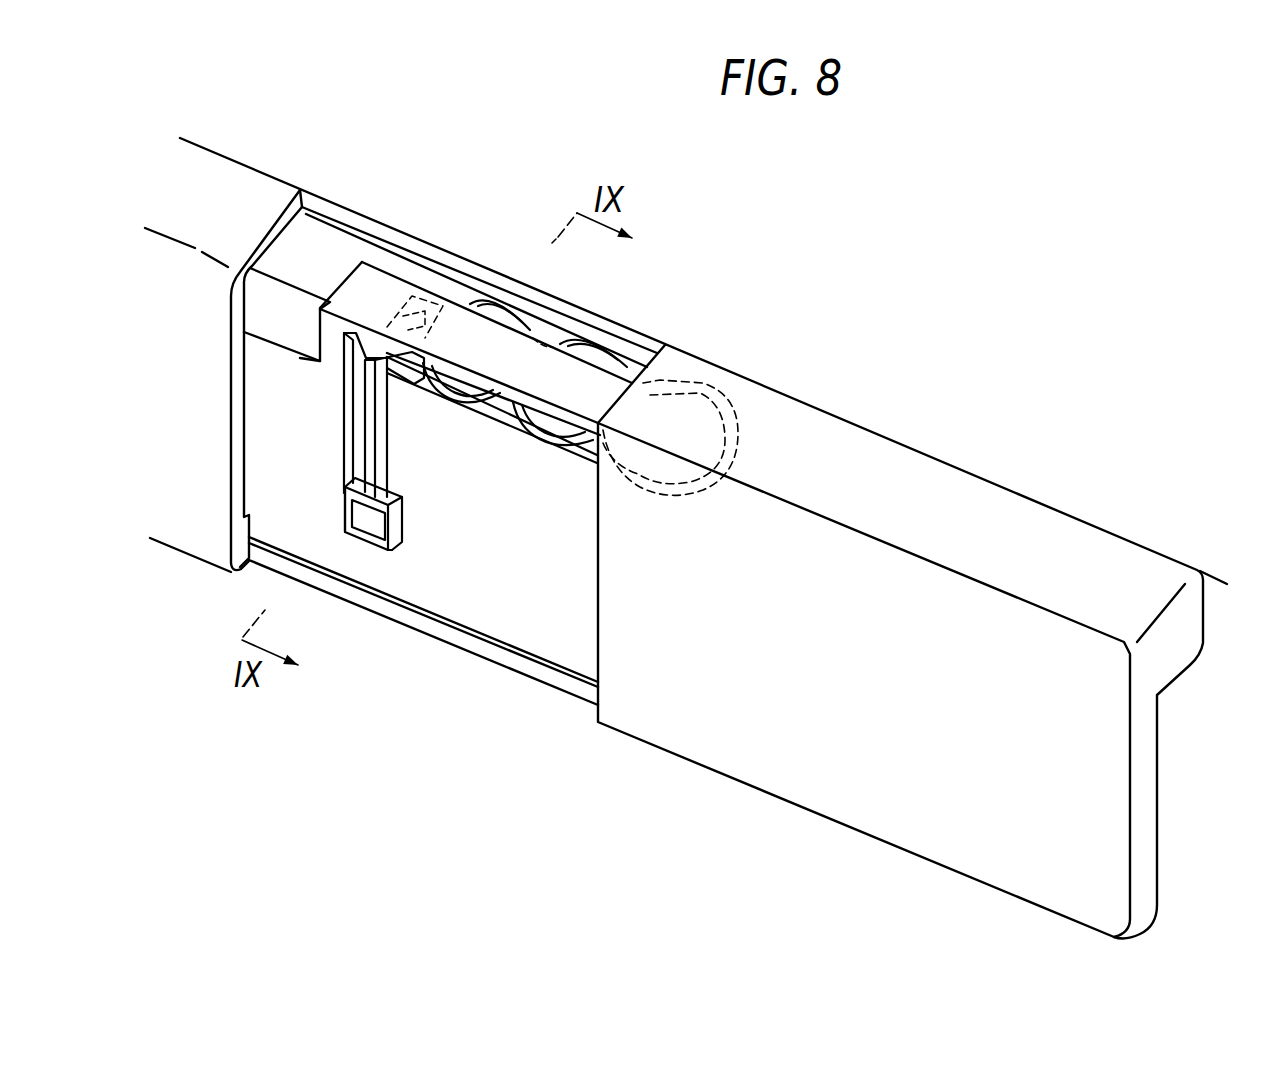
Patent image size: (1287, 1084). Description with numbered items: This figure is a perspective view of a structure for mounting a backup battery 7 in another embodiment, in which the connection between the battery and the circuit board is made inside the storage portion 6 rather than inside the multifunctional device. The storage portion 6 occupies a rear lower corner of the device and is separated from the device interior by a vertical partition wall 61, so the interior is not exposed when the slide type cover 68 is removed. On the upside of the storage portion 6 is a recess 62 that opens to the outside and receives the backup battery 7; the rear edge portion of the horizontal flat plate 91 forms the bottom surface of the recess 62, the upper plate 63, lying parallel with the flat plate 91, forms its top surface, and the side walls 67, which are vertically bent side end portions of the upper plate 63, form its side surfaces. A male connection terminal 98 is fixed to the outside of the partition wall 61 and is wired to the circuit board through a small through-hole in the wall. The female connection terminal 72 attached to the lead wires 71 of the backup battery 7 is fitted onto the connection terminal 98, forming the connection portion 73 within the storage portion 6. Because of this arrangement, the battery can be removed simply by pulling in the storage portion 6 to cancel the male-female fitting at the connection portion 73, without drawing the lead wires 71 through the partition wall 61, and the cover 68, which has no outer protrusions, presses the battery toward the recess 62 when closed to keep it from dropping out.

The storage portion 6 is at (373, 690).
The backup battery 7 is at (513, 311).
The partition wall 61 is at (553, 650).
The recess 62 is at (491, 421).
The upper plate 63 is at (585, 370).
The side walls 67 is at (332, 337).
The cover 68 is at (645, 727).
The lead wires 71 is at (367, 437).
The connection terminal 72 is at (373, 517).
The connection portion 73 is at (407, 572).
The flat plate 91 is at (600, 447).
The male connection terminal 98 is at (353, 530).